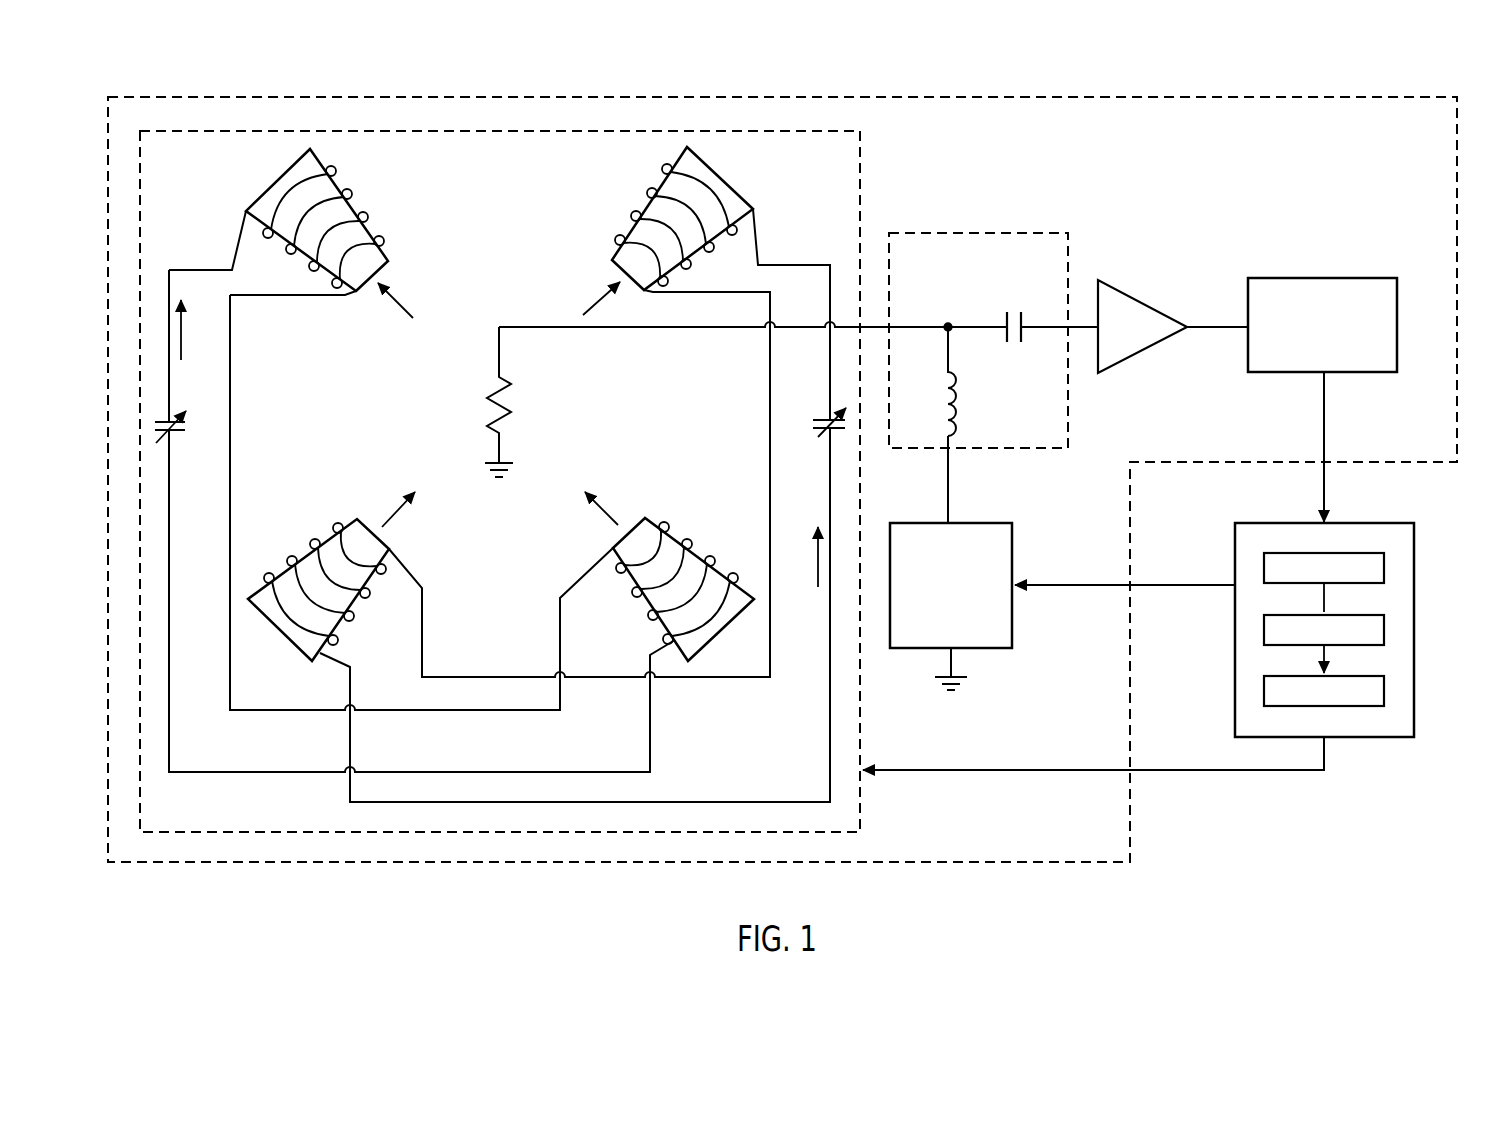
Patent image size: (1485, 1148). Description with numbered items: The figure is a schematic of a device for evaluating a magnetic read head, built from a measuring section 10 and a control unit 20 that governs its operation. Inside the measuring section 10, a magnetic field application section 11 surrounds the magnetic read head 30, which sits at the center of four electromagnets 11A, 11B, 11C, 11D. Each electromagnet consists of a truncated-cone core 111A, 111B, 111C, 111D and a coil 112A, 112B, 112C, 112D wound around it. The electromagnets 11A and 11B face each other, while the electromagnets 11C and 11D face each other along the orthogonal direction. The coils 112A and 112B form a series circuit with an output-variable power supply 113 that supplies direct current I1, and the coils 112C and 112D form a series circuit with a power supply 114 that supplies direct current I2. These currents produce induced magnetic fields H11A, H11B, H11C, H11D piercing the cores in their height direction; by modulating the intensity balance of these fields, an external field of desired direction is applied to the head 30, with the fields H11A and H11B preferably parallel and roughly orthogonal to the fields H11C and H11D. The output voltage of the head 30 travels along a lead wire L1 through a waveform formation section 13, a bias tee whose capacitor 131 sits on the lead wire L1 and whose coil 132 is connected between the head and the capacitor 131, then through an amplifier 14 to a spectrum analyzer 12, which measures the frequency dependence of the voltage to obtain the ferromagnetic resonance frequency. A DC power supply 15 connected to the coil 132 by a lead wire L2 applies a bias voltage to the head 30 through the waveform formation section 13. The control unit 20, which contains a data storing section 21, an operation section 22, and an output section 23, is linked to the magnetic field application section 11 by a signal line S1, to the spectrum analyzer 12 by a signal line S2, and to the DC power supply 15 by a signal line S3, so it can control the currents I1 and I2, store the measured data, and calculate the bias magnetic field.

The measuring section 10 is at (785, 97).
The magnetic field application section 11 is at (863, 152).
The electromagnet 11A is at (708, 212).
The electromagnet 11B is at (320, 556).
The electromagnet 11C is at (678, 547).
The electromagnet 11D is at (289, 246).
The core 111A is at (618, 255).
The core 111B is at (342, 602).
The core 111C is at (647, 585).
The core 111D is at (360, 280).
The coil 112A is at (640, 210).
The coil 112B is at (345, 518).
The coil 112C is at (670, 530).
The coil 112D is at (373, 220).
The induced magnetic field H11A is at (583, 313).
The induced magnetic field H11B is at (402, 512).
The induced magnetic field H11C is at (608, 508).
The induced magnetic field H11D is at (412, 313).
The power supply 113 is at (828, 430).
The power supply 114 is at (175, 437).
The direct current I1 is at (802, 557).
The direct current I2 is at (195, 330).
The magnetic read head 30 is at (504, 376).
The spectrum analyzer 12 is at (1368, 277).
The waveform formation section 13 is at (980, 233).
The capacitor 131 is at (1022, 318).
The coil 132 is at (958, 399).
The amplifier 14 is at (1145, 302).
The DC power supply 15 is at (998, 522).
The control unit 20 is at (1349, 615).
The data storing section 21 is at (1385, 565).
The operation section 22 is at (1385, 627).
The output section 23 is at (1385, 688).
The lead wire L1 is at (803, 333).
The lead wire L2 is at (950, 478).
The signal line S1 is at (1175, 770).
The signal line S2 is at (1326, 414).
The signal line S3 is at (1087, 587).